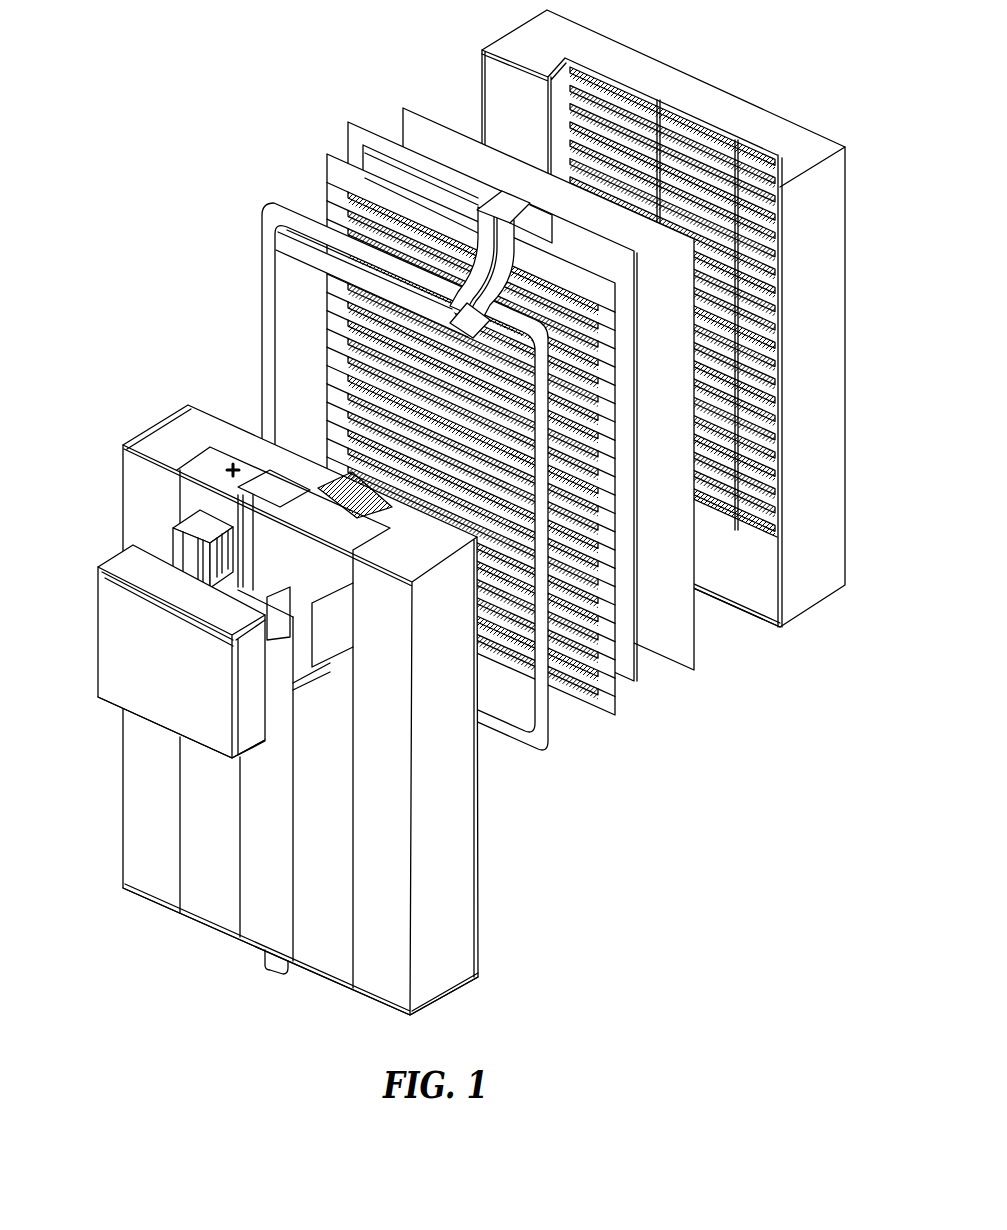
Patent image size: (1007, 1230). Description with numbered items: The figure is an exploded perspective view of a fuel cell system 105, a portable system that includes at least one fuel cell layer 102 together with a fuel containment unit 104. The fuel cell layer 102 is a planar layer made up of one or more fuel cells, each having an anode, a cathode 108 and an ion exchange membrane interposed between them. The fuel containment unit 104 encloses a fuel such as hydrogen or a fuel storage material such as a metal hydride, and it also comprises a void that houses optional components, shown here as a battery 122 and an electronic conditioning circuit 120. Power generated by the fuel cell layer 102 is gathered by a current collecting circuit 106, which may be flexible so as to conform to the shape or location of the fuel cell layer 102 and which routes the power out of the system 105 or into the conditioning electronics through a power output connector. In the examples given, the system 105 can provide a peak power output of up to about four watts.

The fuel cell layer 102 is at (612, 737).
The fuel containment unit 104 is at (138, 492).
The fuel cell system 105 is at (228, 66).
The current collecting circuit 106 is at (640, 680).
The cathode 108 is at (623, 704).
The electronic conditioning circuit 120 is at (172, 529).
The battery 122 is at (127, 665).